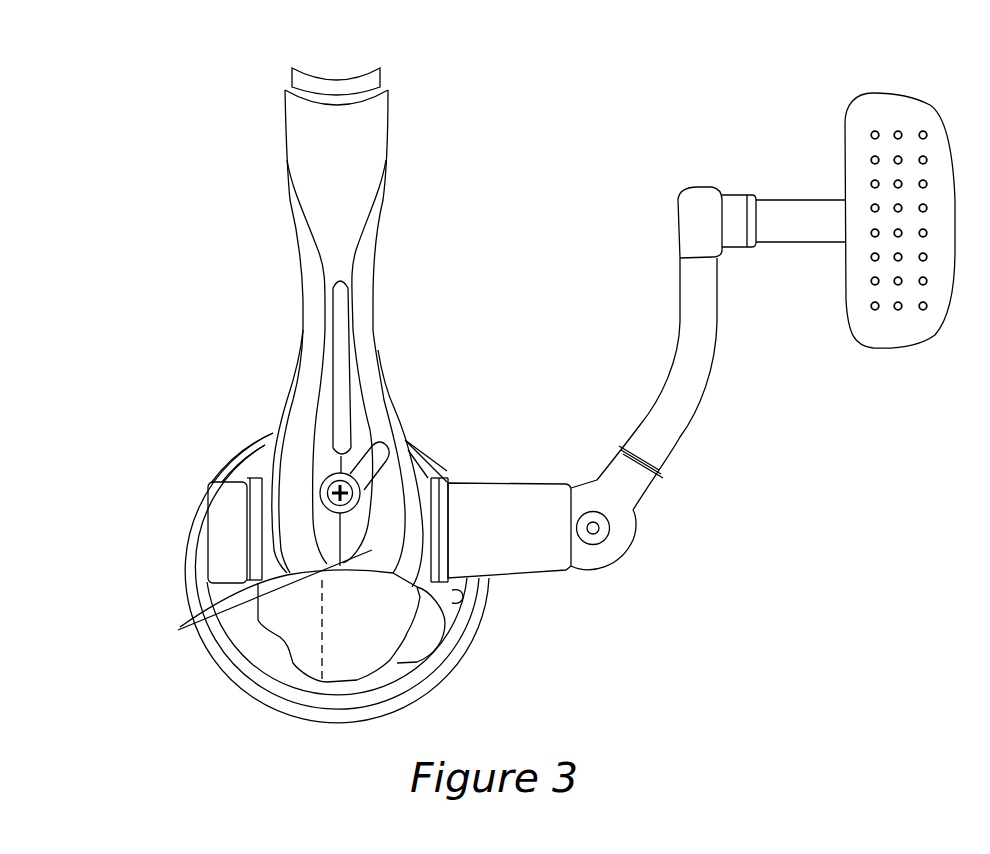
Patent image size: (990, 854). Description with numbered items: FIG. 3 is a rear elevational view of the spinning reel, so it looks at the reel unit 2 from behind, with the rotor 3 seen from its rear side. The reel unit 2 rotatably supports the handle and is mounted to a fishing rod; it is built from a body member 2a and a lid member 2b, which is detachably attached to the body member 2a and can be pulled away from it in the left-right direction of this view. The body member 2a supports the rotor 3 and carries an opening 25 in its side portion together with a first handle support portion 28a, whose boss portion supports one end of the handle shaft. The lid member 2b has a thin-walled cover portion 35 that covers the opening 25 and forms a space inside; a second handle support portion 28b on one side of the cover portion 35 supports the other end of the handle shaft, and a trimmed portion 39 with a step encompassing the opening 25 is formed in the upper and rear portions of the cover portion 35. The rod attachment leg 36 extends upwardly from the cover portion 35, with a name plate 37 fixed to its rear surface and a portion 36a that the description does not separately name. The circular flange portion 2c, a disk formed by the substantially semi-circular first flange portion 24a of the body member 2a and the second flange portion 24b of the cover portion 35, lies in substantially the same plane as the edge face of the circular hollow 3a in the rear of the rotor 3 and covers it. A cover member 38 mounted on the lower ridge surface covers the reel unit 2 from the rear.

The reel unit 2 is at (403, 300).
The body member 2a is at (405, 440).
The lid member 2b is at (288, 395).
The circular flange portion 2c is at (385, 594).
The rotor 3 is at (473, 638).
The circular hollow 3a is at (463, 597).
The first flange portion 24a is at (395, 677).
The second flange portion 24b is at (380, 717).
The opening 25 is at (178, 630).
The first handle support portion 28a is at (446, 482).
The second handle support portion 28b is at (262, 512).
The cover portion 35 is at (262, 440).
The rod attachment leg 36 is at (310, 153).
The handle cap 36a is at (350, 80).
The name plate 37 is at (333, 356).
The cover member 38 is at (302, 638).
The trimmed portion 39 is at (342, 538).